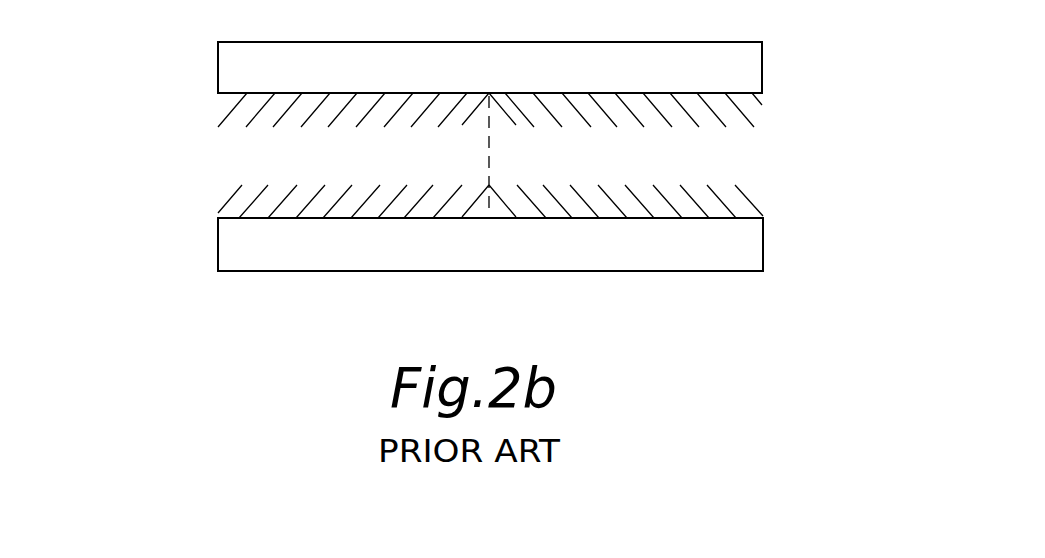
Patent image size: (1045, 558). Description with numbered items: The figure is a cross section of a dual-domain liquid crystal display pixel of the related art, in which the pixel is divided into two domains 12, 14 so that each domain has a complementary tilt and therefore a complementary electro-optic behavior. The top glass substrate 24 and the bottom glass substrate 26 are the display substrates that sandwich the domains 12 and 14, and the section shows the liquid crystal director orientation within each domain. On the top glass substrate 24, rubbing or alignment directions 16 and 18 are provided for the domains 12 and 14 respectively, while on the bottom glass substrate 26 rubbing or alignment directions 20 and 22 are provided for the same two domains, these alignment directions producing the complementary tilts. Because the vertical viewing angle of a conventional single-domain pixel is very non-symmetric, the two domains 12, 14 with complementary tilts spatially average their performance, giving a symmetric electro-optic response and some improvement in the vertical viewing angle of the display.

The domain 12 is at (270, 150).
The domain 14 is at (690, 157).
The rubbing or alignment direction 16 is at (242, 128).
The rubbing or alignment direction 18 is at (690, 113).
The rubbing or alignment direction 20 is at (267, 187).
The rubbing or alignment direction 22 is at (708, 183).
The top glass substrate 24 is at (218, 68).
The bottom glass substrate 26 is at (765, 237).